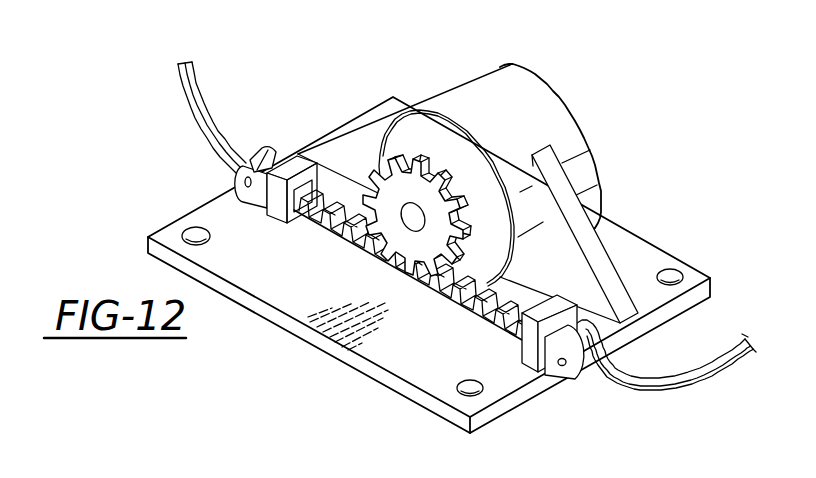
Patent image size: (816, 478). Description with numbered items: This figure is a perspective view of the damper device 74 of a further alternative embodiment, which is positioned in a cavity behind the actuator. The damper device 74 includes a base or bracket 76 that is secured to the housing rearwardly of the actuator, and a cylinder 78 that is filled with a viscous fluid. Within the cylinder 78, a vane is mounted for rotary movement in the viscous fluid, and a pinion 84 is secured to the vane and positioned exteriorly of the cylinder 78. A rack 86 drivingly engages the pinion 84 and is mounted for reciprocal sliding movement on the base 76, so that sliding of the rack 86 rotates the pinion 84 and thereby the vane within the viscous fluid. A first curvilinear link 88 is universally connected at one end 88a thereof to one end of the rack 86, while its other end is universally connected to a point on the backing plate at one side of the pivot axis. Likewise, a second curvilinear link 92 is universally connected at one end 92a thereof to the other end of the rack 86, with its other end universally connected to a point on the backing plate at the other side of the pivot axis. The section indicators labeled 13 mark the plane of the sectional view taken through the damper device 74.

The section line 13- 13 is at (340, 115).
The damper device 74 is at (452, 70).
The base or bracket 76 is at (312, 335).
The cylinder 78 is at (533, 68).
The pinion 84 is at (447, 180).
The rack 86 is at (370, 255).
The first curvilinear link 88 is at (716, 349).
The one end of the first curvilinear link 88a is at (573, 379).
The second curvilinear link 92 is at (208, 104).
The one end of the second curvilinear link 92a is at (244, 182).